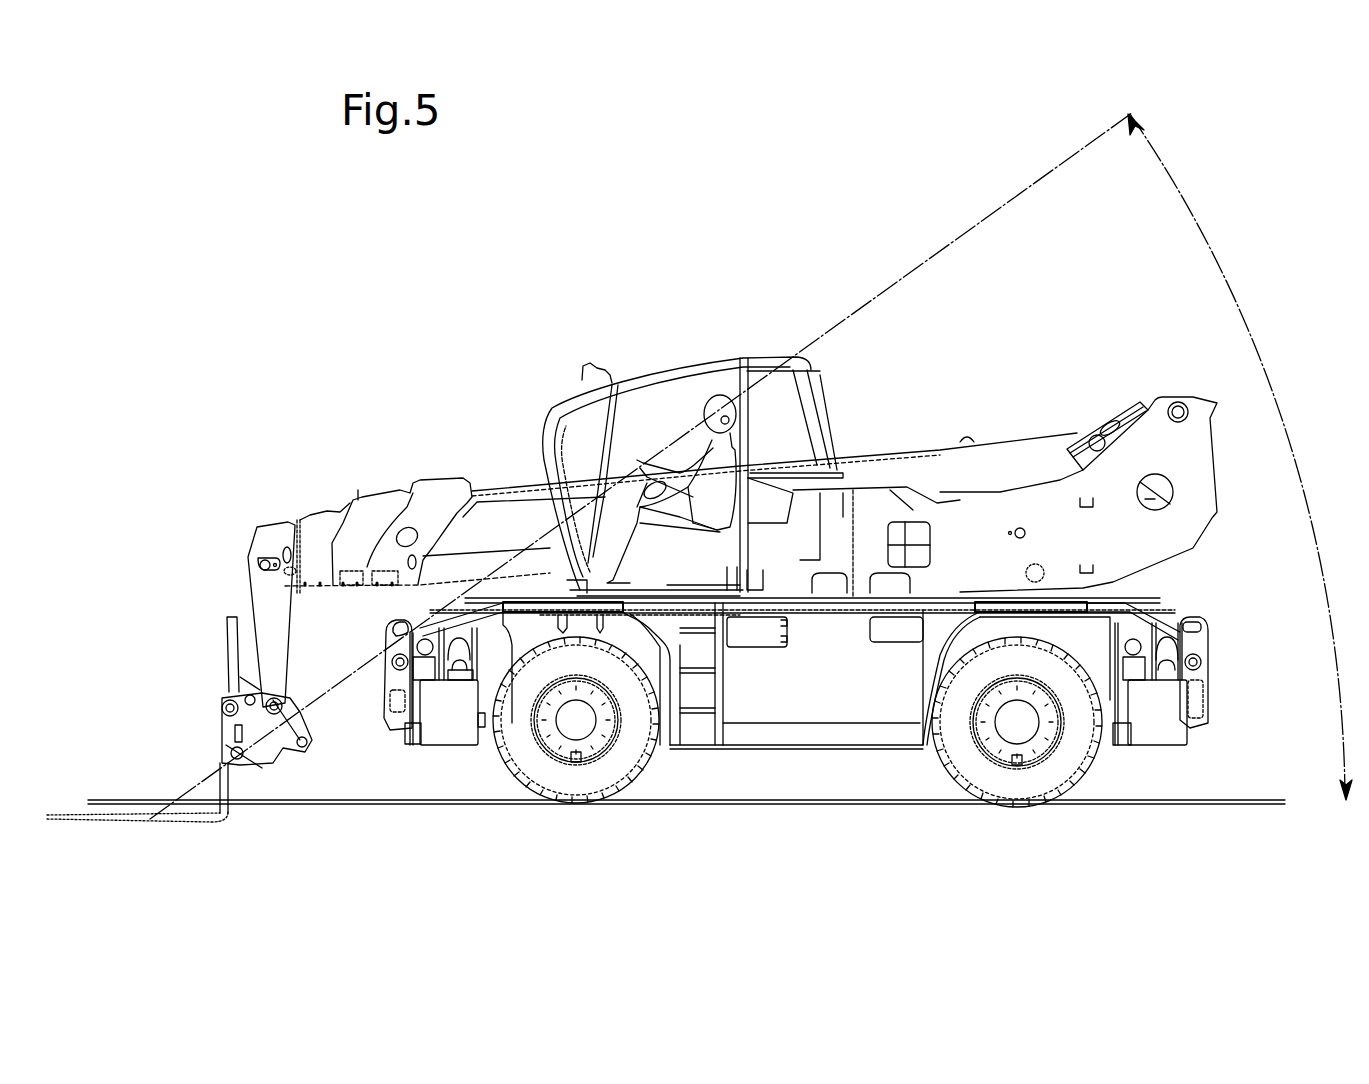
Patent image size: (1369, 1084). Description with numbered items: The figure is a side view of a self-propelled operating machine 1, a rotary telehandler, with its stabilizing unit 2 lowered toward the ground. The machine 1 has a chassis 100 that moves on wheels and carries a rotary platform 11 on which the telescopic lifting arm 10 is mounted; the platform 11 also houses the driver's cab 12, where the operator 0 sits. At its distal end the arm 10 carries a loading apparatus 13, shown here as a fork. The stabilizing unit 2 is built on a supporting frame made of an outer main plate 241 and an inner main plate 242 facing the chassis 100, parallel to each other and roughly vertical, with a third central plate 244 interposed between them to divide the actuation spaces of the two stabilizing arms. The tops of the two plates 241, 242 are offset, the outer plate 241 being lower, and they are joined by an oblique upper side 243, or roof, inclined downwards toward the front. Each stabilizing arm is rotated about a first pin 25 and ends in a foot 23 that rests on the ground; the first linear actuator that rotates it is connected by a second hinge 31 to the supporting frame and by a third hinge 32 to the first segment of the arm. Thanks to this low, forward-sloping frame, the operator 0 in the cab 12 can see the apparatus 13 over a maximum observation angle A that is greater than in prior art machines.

The self-propelled operating machine 1 is at (250, 320).
The telescopic lifting arm 10 is at (487, 497).
The rotary platform 11 is at (995, 522).
The driver's cab 12 is at (668, 360).
The loading apparatus 13 is at (132, 753).
The operator 0 is at (723, 473).
The chassis 100 is at (832, 608).
The unit 2 is at (407, 757).
The foot 23 is at (457, 723).
The first pin 25 is at (403, 727).
The outer main plate 241 is at (407, 653).
The inner main plate 242 is at (457, 675).
The upper side 243 is at (423, 640).
The third central plate 244 is at (460, 665).
The second hinge 31 is at (467, 637).
The third hinge 32 is at (467, 678).
The maximum observation angle A is at (1267, 373).